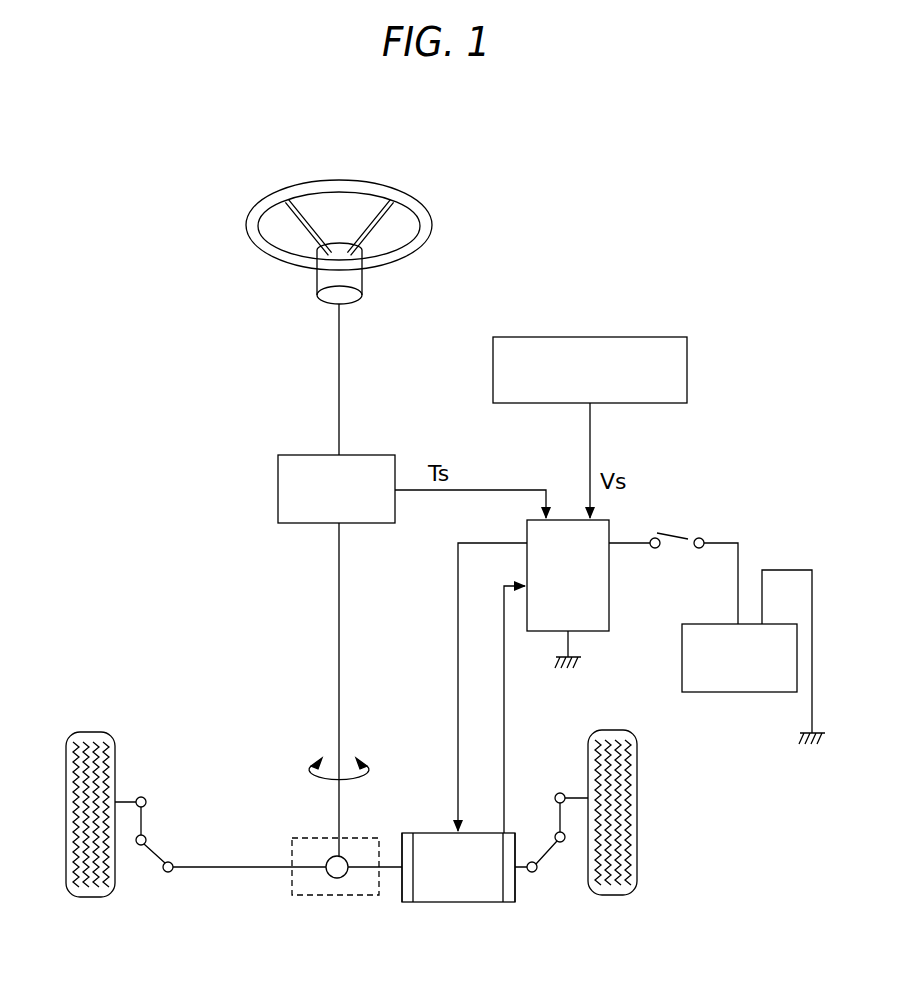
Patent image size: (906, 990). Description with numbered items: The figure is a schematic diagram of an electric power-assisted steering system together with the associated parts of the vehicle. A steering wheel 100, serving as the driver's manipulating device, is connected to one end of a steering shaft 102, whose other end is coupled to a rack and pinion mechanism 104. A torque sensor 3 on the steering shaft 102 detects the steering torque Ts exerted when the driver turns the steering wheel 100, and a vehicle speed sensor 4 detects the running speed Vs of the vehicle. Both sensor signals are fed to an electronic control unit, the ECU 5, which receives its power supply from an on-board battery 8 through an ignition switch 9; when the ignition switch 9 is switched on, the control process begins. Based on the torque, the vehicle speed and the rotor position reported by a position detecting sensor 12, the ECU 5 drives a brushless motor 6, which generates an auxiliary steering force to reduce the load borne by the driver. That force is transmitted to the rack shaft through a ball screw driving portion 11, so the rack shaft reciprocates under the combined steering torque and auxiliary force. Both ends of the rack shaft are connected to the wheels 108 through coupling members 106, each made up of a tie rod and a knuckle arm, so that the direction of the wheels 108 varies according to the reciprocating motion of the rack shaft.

The steering wheel 100 is at (432, 227).
The steering shaft 102 is at (339, 333).
The torque sensor 3 is at (278, 488).
The vehicle speed sensor 4 is at (588, 337).
The electronic control unit (ECU) 5 is at (609, 576).
The ignition switch 9 is at (685, 531).
The on-board battery 8 is at (740, 692).
The brushless motor 6 is at (460, 902).
The ball screw driving portion 11 is at (405, 902).
The position detecting sensor 12 is at (508, 902).
The rack and pinion mechanism 104 is at (345, 895).
The tie rod / knuckle linkage 106 is at (166, 847).
The wheels 108 is at (97, 897).